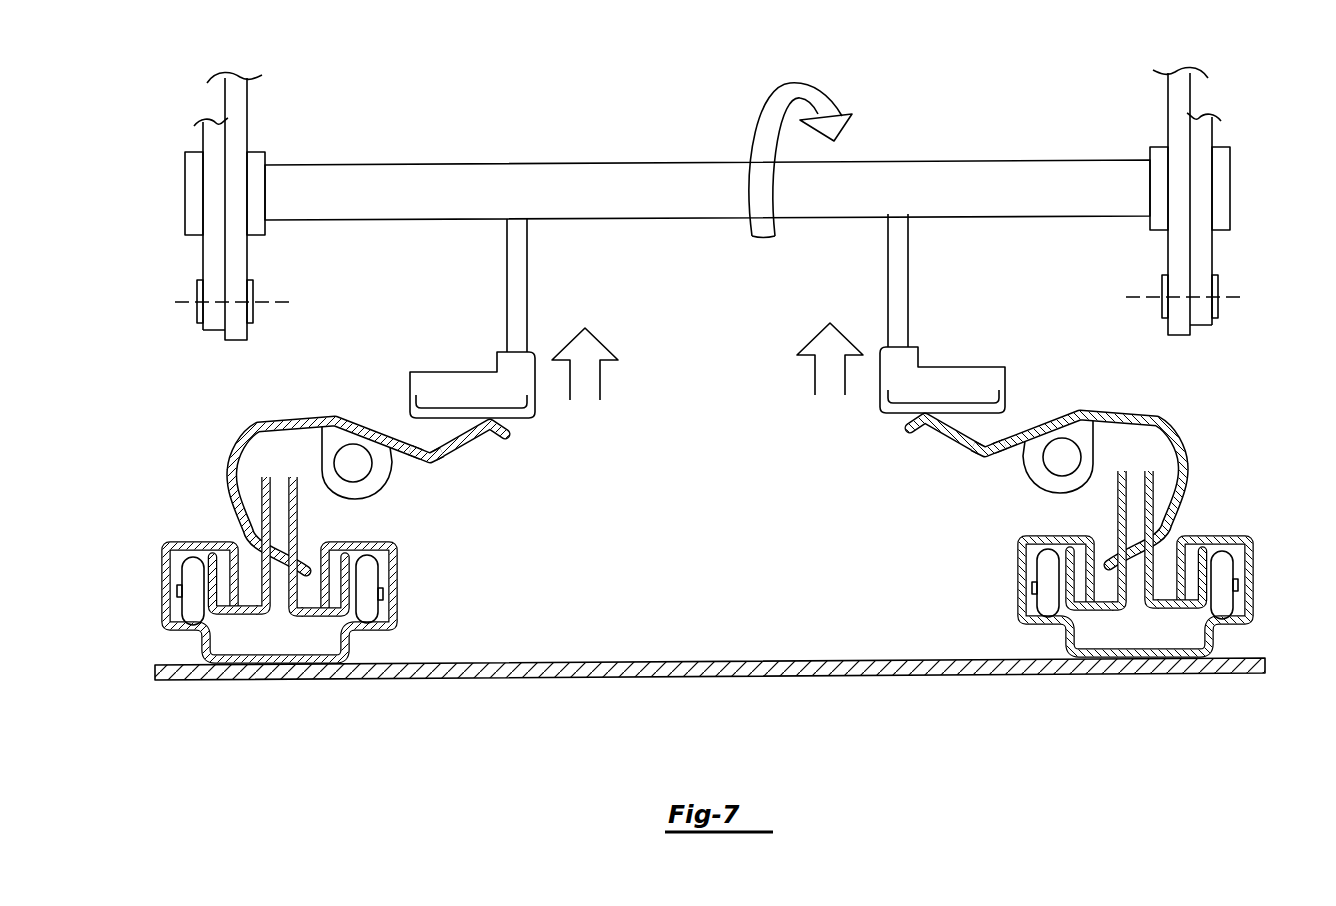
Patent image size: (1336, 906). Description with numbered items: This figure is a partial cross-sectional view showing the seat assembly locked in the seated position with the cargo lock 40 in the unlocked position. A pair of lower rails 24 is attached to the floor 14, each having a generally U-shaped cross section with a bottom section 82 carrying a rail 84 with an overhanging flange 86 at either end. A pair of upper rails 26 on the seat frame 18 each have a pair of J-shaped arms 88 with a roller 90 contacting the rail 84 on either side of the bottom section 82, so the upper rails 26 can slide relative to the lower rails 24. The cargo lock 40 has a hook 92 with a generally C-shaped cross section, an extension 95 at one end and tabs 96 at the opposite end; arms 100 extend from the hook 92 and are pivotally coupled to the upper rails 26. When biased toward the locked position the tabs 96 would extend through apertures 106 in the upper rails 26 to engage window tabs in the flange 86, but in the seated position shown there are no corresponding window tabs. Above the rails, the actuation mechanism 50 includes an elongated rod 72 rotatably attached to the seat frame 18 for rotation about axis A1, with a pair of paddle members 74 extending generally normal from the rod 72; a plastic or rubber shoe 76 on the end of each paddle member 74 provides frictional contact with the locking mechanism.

The floor 14 is at (585, 682).
The seat frame 18 is at (203, 139).
The lower rails 24 is at (148, 650).
The upper rails 26 is at (232, 510).
The cargo lock 40 is at (1252, 392).
The actuation mechanism 50 is at (940, 117).
The elongated rod 72 is at (329, 163).
The paddle members 74 is at (507, 279).
The shoe 76 is at (410, 388).
The bottom section 82 is at (302, 670).
The rail 84 is at (197, 626).
The overhanging flange 86 is at (232, 584).
The J-shaped arms 88 is at (298, 612).
The roller 90 is at (186, 598).
The hook 92 is at (256, 429).
The extension 95 is at (509, 441).
The tabs 96 is at (324, 567).
The arms 100 is at (389, 470).
The apertures 106 is at (293, 503).
The axis A1 is at (1232, 187).